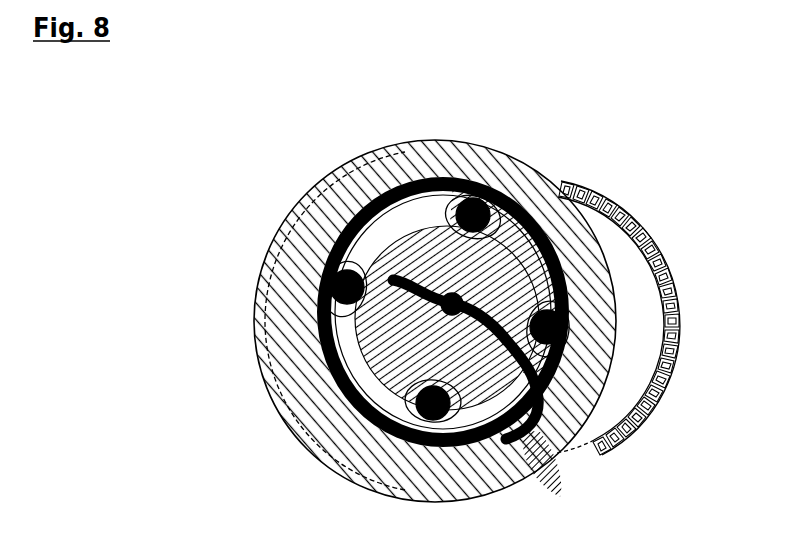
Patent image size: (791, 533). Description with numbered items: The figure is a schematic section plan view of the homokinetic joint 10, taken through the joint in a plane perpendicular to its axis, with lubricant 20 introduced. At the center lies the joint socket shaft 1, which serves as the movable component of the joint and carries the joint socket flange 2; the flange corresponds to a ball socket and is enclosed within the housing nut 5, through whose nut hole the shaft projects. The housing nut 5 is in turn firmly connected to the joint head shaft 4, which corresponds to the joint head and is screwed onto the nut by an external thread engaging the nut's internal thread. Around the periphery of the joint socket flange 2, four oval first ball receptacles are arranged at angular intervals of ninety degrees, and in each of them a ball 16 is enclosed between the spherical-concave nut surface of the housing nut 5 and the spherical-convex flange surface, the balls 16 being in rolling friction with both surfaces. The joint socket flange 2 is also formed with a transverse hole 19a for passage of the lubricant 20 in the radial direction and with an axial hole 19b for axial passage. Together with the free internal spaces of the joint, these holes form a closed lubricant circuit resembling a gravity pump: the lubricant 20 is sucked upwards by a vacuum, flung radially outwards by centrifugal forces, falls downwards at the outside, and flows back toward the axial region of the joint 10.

The homokinetic joint 10 is at (144, 168).
The ball 16 is at (345, 280).
The joint socket shaft 1 is at (414, 244).
The joint socket flange 2 is at (418, 213).
The housing nut 5 is at (493, 156).
The transverse hole 19a is at (486, 442).
The axial hole 19b is at (420, 316).
The joint head shaft 4 is at (618, 238).
The lubricant 20 is at (523, 430).